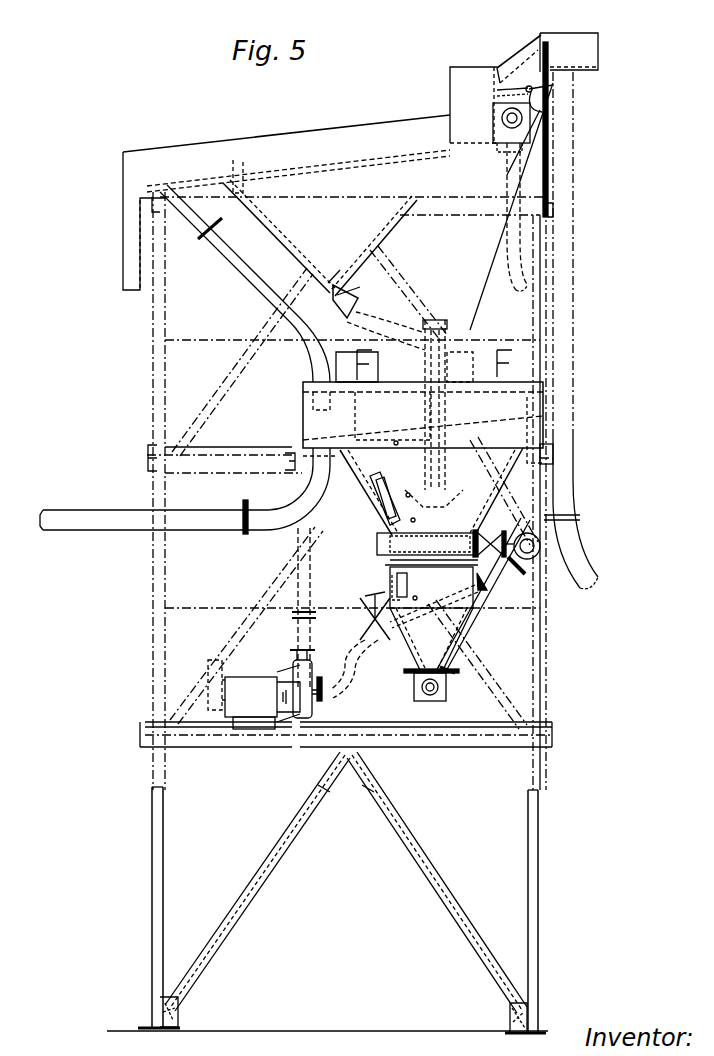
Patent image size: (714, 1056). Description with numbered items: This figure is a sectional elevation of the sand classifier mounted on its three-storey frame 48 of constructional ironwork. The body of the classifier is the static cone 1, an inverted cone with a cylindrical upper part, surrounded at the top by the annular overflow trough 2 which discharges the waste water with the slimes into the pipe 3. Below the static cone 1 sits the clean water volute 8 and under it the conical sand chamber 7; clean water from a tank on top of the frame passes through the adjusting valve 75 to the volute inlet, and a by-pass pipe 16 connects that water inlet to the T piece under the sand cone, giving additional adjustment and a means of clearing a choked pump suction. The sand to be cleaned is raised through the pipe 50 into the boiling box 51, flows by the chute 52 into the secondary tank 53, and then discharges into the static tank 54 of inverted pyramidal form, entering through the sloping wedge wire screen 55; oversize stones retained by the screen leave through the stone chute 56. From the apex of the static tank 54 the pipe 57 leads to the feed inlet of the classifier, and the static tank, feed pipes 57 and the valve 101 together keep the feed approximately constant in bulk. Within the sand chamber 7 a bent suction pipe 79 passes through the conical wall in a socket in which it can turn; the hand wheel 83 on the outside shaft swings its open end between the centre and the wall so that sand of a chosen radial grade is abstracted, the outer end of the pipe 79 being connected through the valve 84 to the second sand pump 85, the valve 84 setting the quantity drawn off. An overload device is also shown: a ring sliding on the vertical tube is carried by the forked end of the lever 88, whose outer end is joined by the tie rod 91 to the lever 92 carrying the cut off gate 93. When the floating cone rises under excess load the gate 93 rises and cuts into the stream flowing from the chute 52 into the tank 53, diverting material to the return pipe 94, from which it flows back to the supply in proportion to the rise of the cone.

The static cone 1 is at (494, 485).
The annular overflow trough 2 is at (543, 424).
The pipe 3 is at (268, 532).
The conical sand chamber 7 is at (413, 652).
The spiral chamber or volute 8 is at (376, 548).
The by-pass pipe 16 is at (497, 595).
The three-storey frame 48 is at (163, 736).
The pipe 50 is at (556, 350).
The boiling box 51 is at (583, 52).
The chute 52 is at (525, 46).
The secondary tank 53 is at (465, 72).
The static tank 54 is at (320, 238).
The wedge wire screen 55 is at (358, 158).
The stone chute 56 is at (131, 259).
The pipe 57 is at (395, 323).
The adjusting valve 75 is at (495, 536).
The bent suction pipe 79 is at (428, 600).
The hand wheel 83 is at (500, 580).
The valve 84 is at (362, 626).
The second sand pump 85 is at (316, 700).
The lever 88 is at (480, 333).
The tie rod 91 is at (497, 262).
The lever 92 is at (545, 114).
The cut off gate 93 is at (502, 95).
The return pipe 94 is at (508, 167).
The valve 101 is at (353, 290).